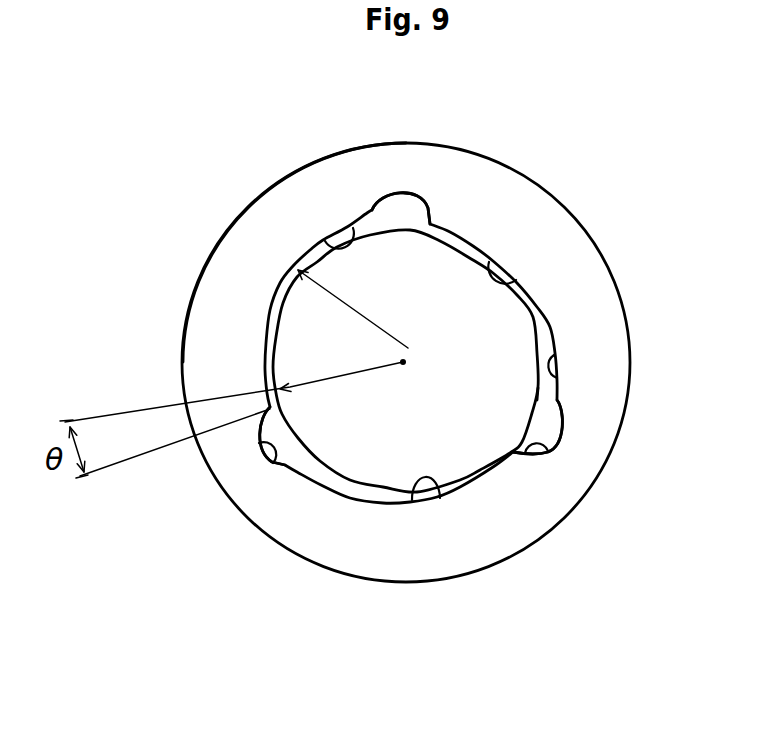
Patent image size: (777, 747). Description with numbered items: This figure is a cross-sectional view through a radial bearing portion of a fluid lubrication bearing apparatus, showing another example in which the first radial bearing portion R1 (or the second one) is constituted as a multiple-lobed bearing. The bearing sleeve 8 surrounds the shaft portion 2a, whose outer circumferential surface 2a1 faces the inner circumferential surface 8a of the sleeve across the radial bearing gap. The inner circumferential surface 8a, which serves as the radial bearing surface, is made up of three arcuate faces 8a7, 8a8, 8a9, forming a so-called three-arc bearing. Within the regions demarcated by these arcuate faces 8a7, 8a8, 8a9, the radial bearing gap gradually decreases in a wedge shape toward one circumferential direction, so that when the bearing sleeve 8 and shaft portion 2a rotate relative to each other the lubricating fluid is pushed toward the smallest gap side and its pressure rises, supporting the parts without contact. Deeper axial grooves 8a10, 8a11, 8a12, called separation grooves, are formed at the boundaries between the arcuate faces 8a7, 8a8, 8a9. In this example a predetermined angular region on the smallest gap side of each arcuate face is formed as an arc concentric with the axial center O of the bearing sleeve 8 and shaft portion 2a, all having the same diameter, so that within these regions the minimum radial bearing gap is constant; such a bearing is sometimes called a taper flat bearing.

The bearing sleeve 8 is at (526, 182).
The inner circumferential surface 8a is at (520, 275).
The arcuate face 8a7 is at (558, 373).
The arcuate face 8a8 is at (353, 242).
The arcuate face 8a9 is at (441, 494).
The axial groove 8a10 is at (528, 456).
The axial groove 8a11 is at (410, 196).
The axial groove 8a12 is at (273, 462).
The shaft portion 2a is at (515, 308).
The outer circumferential surface 2a1 is at (538, 395).
The first radial bearing portion R1 is at (212, 236).
The axial center O is at (403, 366).